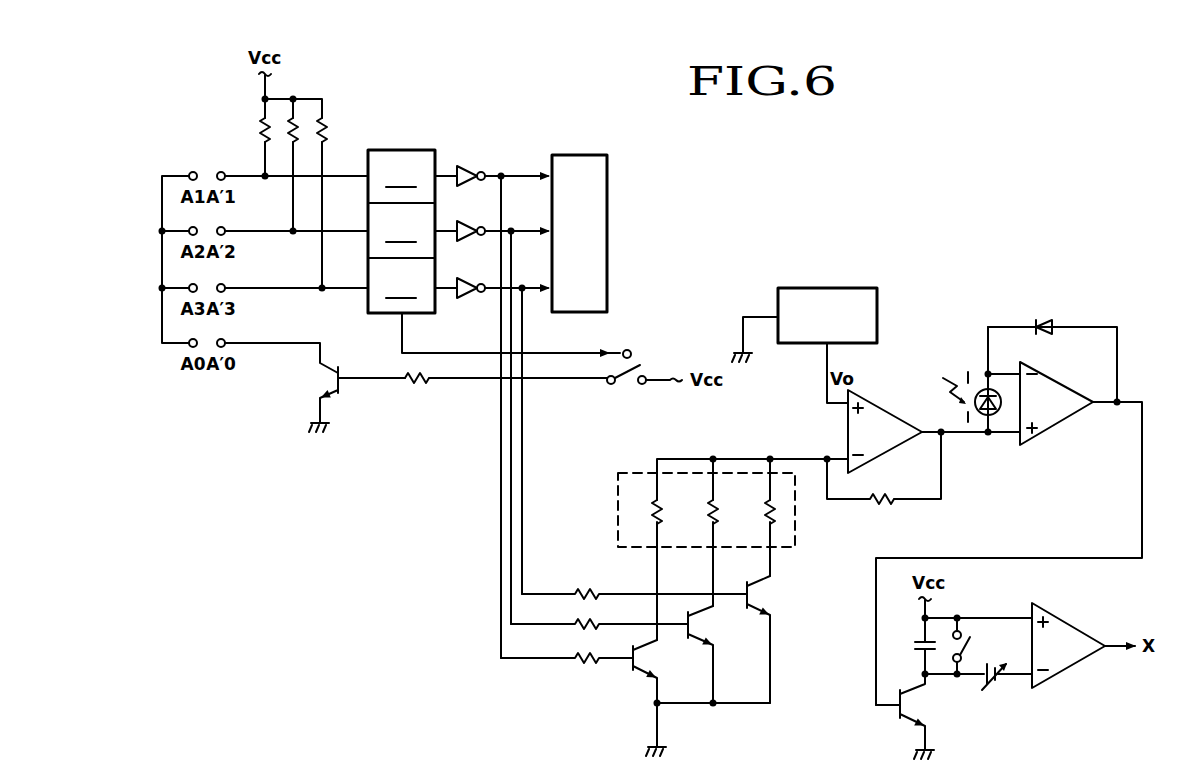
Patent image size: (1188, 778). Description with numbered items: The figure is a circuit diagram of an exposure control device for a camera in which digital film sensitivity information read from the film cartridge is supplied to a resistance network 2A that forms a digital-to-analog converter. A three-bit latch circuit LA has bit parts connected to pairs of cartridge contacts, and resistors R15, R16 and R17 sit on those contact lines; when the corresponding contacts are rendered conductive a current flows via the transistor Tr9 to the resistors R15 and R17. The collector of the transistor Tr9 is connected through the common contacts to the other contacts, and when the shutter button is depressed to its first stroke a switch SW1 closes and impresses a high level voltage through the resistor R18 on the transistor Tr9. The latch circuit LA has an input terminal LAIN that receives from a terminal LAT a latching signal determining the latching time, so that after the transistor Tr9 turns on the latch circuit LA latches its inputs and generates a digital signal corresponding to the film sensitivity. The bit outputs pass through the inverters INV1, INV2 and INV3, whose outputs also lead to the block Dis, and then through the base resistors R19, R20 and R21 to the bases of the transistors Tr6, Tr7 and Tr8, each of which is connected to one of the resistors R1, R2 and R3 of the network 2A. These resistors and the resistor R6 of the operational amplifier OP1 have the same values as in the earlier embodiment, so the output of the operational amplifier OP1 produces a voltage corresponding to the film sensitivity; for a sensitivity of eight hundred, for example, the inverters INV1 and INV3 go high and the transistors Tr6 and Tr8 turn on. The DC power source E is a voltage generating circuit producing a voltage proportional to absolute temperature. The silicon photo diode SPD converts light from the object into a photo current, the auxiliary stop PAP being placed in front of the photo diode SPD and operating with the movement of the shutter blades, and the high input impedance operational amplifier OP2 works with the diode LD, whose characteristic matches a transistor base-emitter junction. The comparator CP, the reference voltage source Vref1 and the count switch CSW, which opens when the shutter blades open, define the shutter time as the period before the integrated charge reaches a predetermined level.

The resistor R15 is at (262, 126).
The pull-up resistor R16 is at (296, 124).
The resistor R17 is at (325, 125).
The latch circuit LA is at (412, 150).
The inverter INV1 is at (470, 166).
The inverter INV2 is at (485, 210).
The inverter INV3 is at (467, 298).
The display Dis is at (588, 155).
The input terminal LAIN is at (398, 332).
The terminal LAT is at (630, 349).
The switch SW1 is at (613, 388).
The transistor Tr9 is at (330, 383).
The resistor R18 is at (420, 388).
The DC power source E is at (805, 288).
The operational amplifier OP1 is at (885, 420).
The resistor R6 is at (886, 508).
The silicon photo diode SPD is at (980, 380).
The auxiliary stop PAP is at (958, 378).
The diode LD is at (1050, 320).
The operational amplifier OP2 is at (1068, 430).
The resistance network 2A is at (618, 500).
The resistor R1 is at (652, 508).
The resistor R2 is at (708, 508).
The resistor R3 is at (765, 508).
The base resistor R19 is at (585, 586).
The base resistor R20 is at (584, 616).
The base resistor R21 is at (585, 668).
The transistor Tr6 is at (642, 676).
The transistor Tr7 is at (700, 632).
The transistor Tr8 is at (765, 598).
The count switch CSW is at (970, 652).
The reference voltage source Vref1 is at (983, 695).
The comparator CP is at (1076, 628).